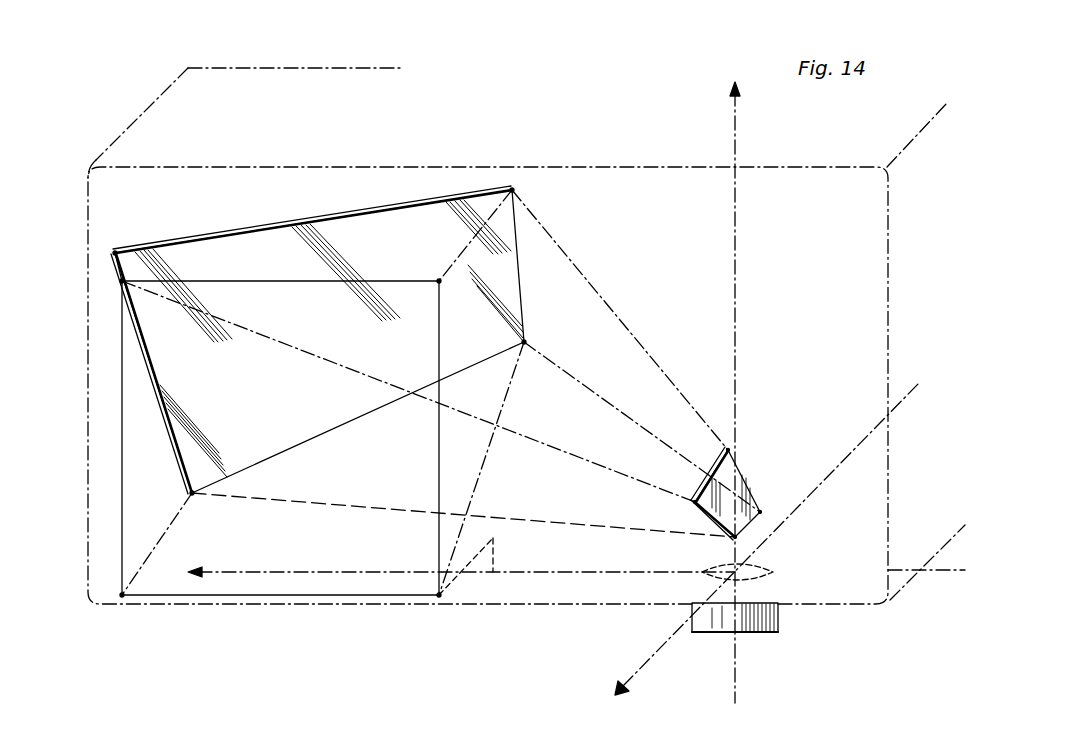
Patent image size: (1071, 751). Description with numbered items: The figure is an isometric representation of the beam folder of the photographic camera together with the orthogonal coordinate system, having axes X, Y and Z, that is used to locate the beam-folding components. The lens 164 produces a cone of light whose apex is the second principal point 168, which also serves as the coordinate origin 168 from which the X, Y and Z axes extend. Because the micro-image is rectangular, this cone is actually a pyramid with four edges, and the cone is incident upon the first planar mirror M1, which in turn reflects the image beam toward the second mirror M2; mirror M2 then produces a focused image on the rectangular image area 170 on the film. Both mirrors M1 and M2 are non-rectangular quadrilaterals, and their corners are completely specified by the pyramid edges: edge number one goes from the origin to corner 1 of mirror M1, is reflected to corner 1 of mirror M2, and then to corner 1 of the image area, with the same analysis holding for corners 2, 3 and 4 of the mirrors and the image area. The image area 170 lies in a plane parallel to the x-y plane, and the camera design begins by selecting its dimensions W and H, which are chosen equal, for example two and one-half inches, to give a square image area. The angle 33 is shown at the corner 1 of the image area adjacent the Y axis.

The corner No. 1 is at (528, 342).
The corner No. 2 is at (516, 190).
The corner No. 3 is at (116, 251).
The corner No. 4 is at (190, 495).
The angle 33 is at (472, 557).
The lens 164 is at (780, 582).
The second principal point 168 is at (758, 572).
The image area 170 is at (135, 483).
The first planar mirror M1 is at (746, 482).
The second mirror M2 is at (246, 230).
The height dimension of image area H is at (438, 456).
The width dimension of image area W is at (276, 597).
The x axis X is at (745, 392).
The y axis Y is at (461, 561).
The z axis Z is at (767, 550).